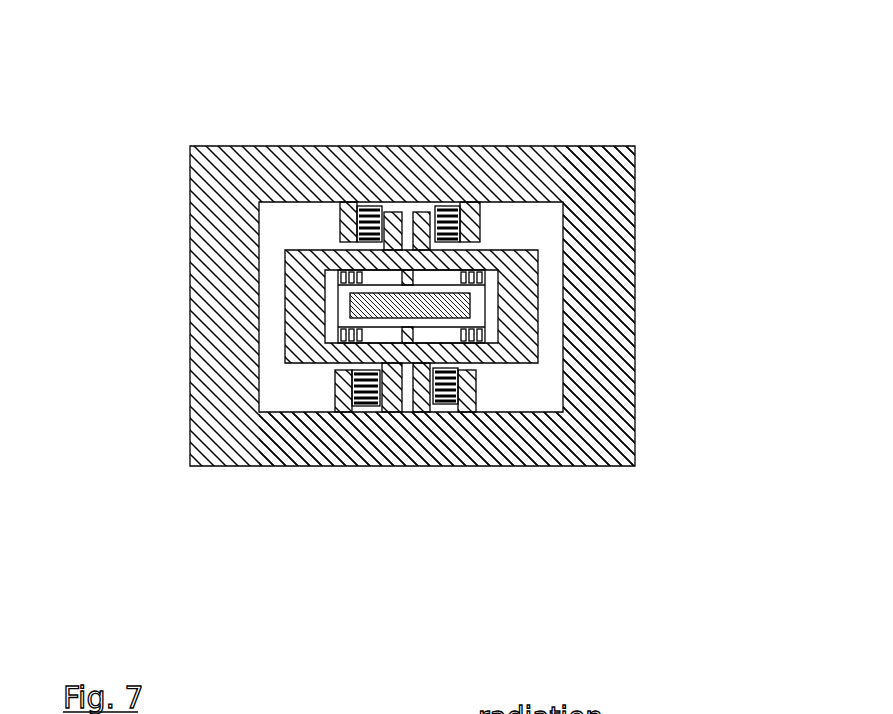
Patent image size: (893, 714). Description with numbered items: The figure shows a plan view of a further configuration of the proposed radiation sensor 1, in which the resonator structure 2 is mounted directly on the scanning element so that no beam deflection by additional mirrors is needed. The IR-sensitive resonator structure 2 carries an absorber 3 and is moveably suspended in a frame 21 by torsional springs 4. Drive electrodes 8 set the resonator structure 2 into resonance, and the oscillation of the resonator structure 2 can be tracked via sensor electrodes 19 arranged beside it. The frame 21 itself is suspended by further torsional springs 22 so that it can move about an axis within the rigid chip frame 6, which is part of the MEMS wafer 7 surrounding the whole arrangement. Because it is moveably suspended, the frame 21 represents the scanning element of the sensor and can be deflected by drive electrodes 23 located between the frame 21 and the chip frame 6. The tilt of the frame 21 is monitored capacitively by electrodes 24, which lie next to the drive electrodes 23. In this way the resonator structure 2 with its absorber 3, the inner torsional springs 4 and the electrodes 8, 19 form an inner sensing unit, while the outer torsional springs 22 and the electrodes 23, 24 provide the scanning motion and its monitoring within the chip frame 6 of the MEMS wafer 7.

The housing 1 is at (190, 268).
The resonator structure 2 is at (345, 315).
The absorber 3 is at (487, 316).
The torsional springs 4 is at (355, 345).
The chip frame 6 is at (352, 437).
The MEMS wafer 7 is at (633, 442).
The drive electrodes 8 is at (497, 257).
The sensor electrodes 19 is at (338, 278).
The frame 21 is at (410, 277).
The torsional springs 22 is at (412, 220).
The drive electrodes 23 is at (357, 215).
The electrodes 24 is at (450, 210).